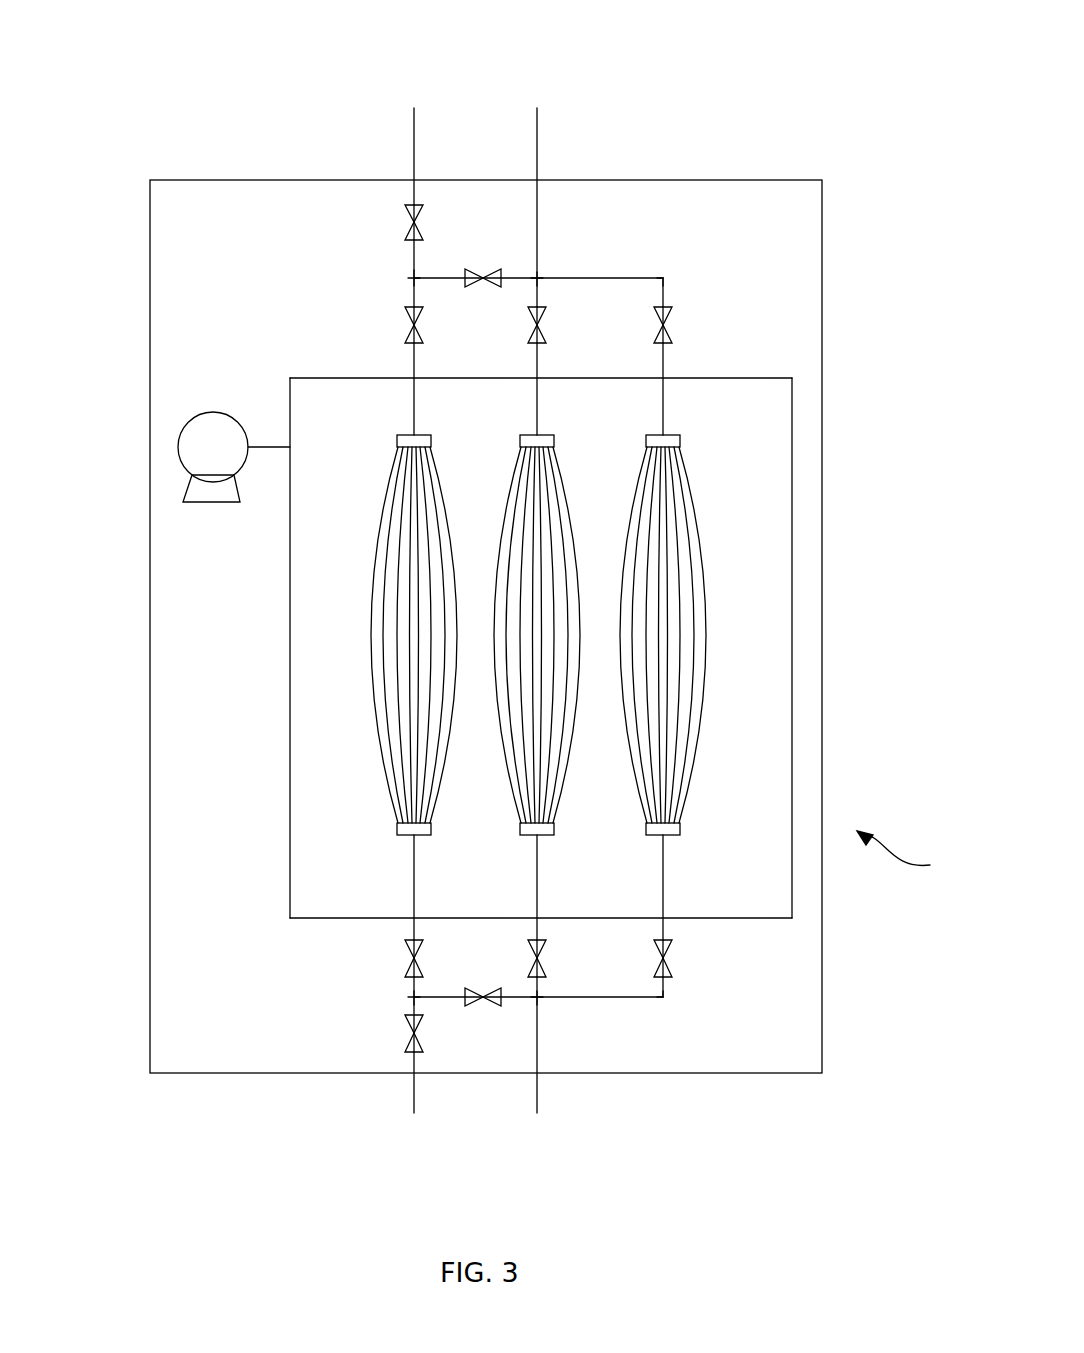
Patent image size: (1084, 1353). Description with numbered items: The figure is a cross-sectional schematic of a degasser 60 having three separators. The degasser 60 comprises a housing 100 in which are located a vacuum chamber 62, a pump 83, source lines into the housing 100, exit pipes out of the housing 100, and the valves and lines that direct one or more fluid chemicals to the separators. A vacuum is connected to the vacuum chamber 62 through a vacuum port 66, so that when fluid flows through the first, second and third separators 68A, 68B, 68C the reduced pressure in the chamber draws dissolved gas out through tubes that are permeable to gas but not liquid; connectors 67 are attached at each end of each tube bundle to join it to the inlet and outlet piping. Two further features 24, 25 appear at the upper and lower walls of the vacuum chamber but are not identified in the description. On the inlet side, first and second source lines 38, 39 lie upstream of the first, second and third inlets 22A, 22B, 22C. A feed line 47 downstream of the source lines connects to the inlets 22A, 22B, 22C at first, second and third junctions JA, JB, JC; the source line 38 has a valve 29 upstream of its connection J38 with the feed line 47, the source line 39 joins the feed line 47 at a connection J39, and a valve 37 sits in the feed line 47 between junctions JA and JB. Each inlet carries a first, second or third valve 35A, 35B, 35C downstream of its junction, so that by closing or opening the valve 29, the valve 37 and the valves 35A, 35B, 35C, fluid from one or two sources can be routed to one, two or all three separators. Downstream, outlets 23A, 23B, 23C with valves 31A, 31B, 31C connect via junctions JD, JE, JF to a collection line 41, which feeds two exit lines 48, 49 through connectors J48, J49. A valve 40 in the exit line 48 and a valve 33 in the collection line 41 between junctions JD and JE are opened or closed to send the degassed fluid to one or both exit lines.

The degasser 60 is at (911, 855).
The housing 100 is at (822, 765).
The vacuum chamber 62 is at (307, 535).
The vessel top wall 24 is at (795, 376).
The vessel bottom wall 25 is at (772, 919).
The pump 83 is at (178, 452).
The vacuum port 66 is at (272, 445).
The connectors 67 is at (681, 442).
The first separator 68A is at (383, 622).
The second separator 68B is at (517, 492).
The third separator 68C is at (705, 633).
The first source line 38 is at (415, 190).
The second source line 39 is at (537, 207).
The valve 29 is at (406, 215).
The valve 37 is at (490, 277).
The feed line 47 is at (625, 278).
The first valve 35A is at (414, 282).
The second valve 35B is at (547, 310).
The third valve 35C is at (668, 313).
The first inlet 22A is at (414, 363).
The second inlet 22B is at (537, 363).
The third inlet 22C is at (665, 363).
The first outlet 23A is at (410, 932).
The second outlet 23B is at (538, 918).
The third outlet 23C is at (668, 929).
The valve 31A is at (407, 951).
The valve 31B is at (530, 947).
The valve 31C is at (668, 950).
The valve 33 is at (483, 1006).
The valve 40 is at (406, 1040).
The collection line 41 is at (618, 998).
The exit line 48 is at (412, 1088).
The exit line 49 is at (537, 1088).
The first junction JA is at (414, 278).
The second junction JB is at (537, 280).
The third junction JC is at (665, 281).
The junction JD is at (414, 997).
The junction JE is at (538, 996).
The junction JF is at (665, 997).
The connection J38 is at (414, 278).
The connection J39 is at (537, 278).
The connector J48 is at (412, 998).
The connector J49 is at (538, 998).